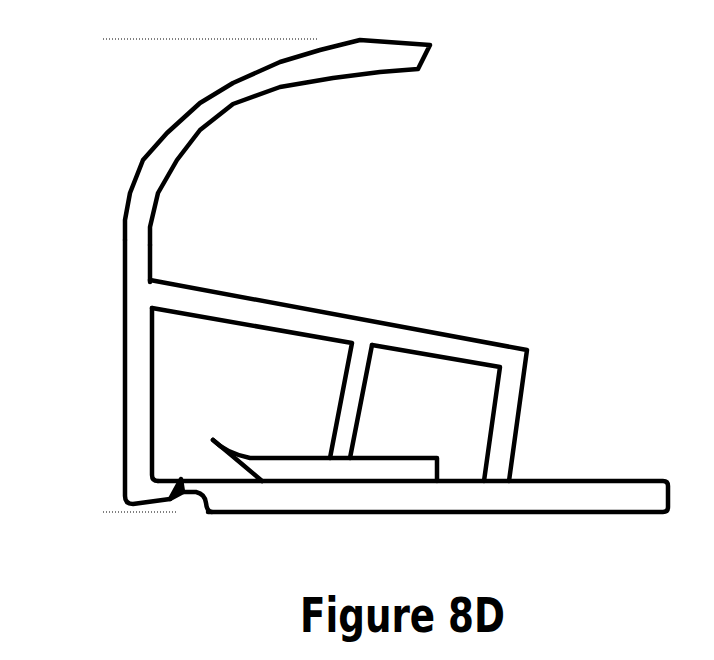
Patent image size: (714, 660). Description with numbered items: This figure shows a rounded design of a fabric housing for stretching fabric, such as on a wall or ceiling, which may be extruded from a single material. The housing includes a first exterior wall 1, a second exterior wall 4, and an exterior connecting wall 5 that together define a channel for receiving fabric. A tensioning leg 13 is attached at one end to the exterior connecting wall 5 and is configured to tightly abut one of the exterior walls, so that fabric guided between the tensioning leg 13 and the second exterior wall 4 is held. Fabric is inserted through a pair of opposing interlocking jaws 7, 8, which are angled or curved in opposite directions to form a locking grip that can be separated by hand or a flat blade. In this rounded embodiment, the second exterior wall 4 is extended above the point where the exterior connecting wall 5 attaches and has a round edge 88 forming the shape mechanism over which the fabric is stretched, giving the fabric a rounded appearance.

The round edge 88 is at (239, 142).
The second exterior wall 4 is at (97, 372).
The exterior connecting wall 5 is at (338, 356).
The tensioning leg 13 is at (437, 396).
The first exterior wall 1 is at (413, 521).
The interlocking jaw 8 is at (121, 532).
The interlocking jaw 7 is at (140, 555).